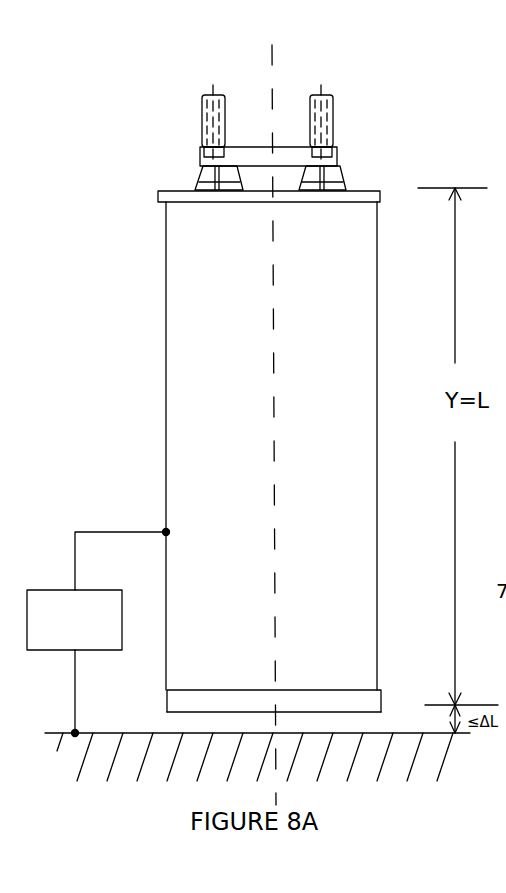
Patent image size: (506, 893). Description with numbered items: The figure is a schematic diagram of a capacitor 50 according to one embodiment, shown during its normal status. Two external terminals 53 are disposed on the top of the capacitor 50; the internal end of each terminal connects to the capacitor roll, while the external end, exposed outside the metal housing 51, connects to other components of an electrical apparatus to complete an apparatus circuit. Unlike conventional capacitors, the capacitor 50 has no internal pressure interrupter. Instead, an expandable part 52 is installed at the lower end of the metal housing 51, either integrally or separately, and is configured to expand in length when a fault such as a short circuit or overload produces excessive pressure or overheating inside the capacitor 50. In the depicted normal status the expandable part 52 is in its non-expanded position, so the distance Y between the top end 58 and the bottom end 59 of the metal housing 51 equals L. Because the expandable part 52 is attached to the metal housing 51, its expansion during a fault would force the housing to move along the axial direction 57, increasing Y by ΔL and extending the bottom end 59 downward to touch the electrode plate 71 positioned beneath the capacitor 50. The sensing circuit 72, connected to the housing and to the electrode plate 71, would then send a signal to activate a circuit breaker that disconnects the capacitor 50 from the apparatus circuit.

The capacitor 50 is at (137, 137).
The metal housing 51 is at (377, 400).
The expandable part 52 is at (393, 683).
The external terminals 53 is at (225, 120).
The axial direction 57 is at (272, 58).
The top end 58 is at (367, 190).
The bottom end 59 is at (347, 712).
The electrode plate 71 is at (370, 783).
The sensing circuit 72 is at (110, 644).